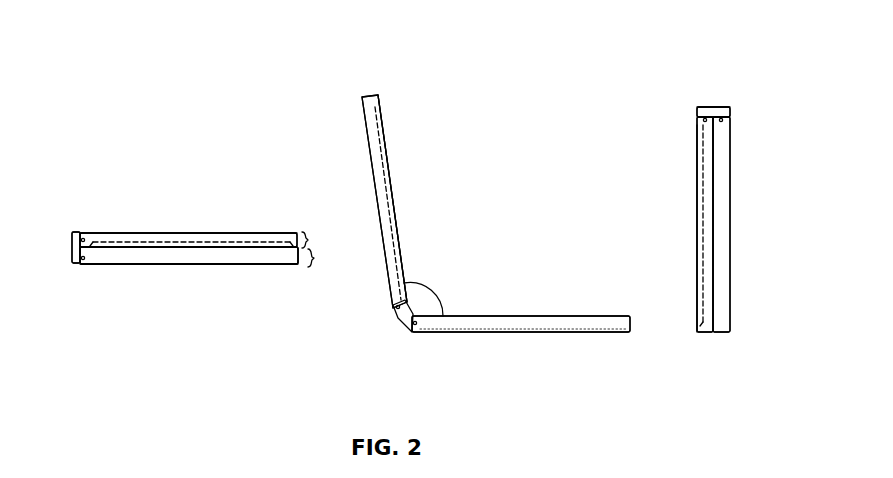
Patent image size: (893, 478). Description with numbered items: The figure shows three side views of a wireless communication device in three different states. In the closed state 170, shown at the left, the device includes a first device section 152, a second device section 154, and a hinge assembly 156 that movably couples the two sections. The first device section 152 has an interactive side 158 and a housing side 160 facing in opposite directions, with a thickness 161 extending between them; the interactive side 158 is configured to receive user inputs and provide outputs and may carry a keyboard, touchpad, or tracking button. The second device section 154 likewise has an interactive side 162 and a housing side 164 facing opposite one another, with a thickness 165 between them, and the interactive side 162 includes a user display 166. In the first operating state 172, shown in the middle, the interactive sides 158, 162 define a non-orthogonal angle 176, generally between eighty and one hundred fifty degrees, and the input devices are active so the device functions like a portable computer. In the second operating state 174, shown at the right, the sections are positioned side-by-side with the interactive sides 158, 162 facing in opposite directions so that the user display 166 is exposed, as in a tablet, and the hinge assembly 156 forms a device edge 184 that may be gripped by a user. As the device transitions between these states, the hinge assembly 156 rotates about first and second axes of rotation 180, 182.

The first device section 152 is at (203, 265).
The second device section 154 is at (180, 232).
The hinge assembly 156 is at (72, 248).
The interactive side 158 is at (275, 234).
The housing side 160 is at (273, 276).
The thickness 161 is at (316, 260).
The interactive side 162 is at (137, 259).
The housing side 164 is at (138, 222).
The thickness 165 is at (308, 236).
The user display 166 is at (110, 243).
The closed state 170 is at (203, 122).
The first operating state 172 is at (531, 162).
The second operating state 174 is at (761, 99).
The non-orthogonal angle 176 is at (440, 280).
The first axis of rotation 180 is at (83, 259).
The second axis of rotation 182 is at (83, 240).
The device edge 184 is at (728, 94).